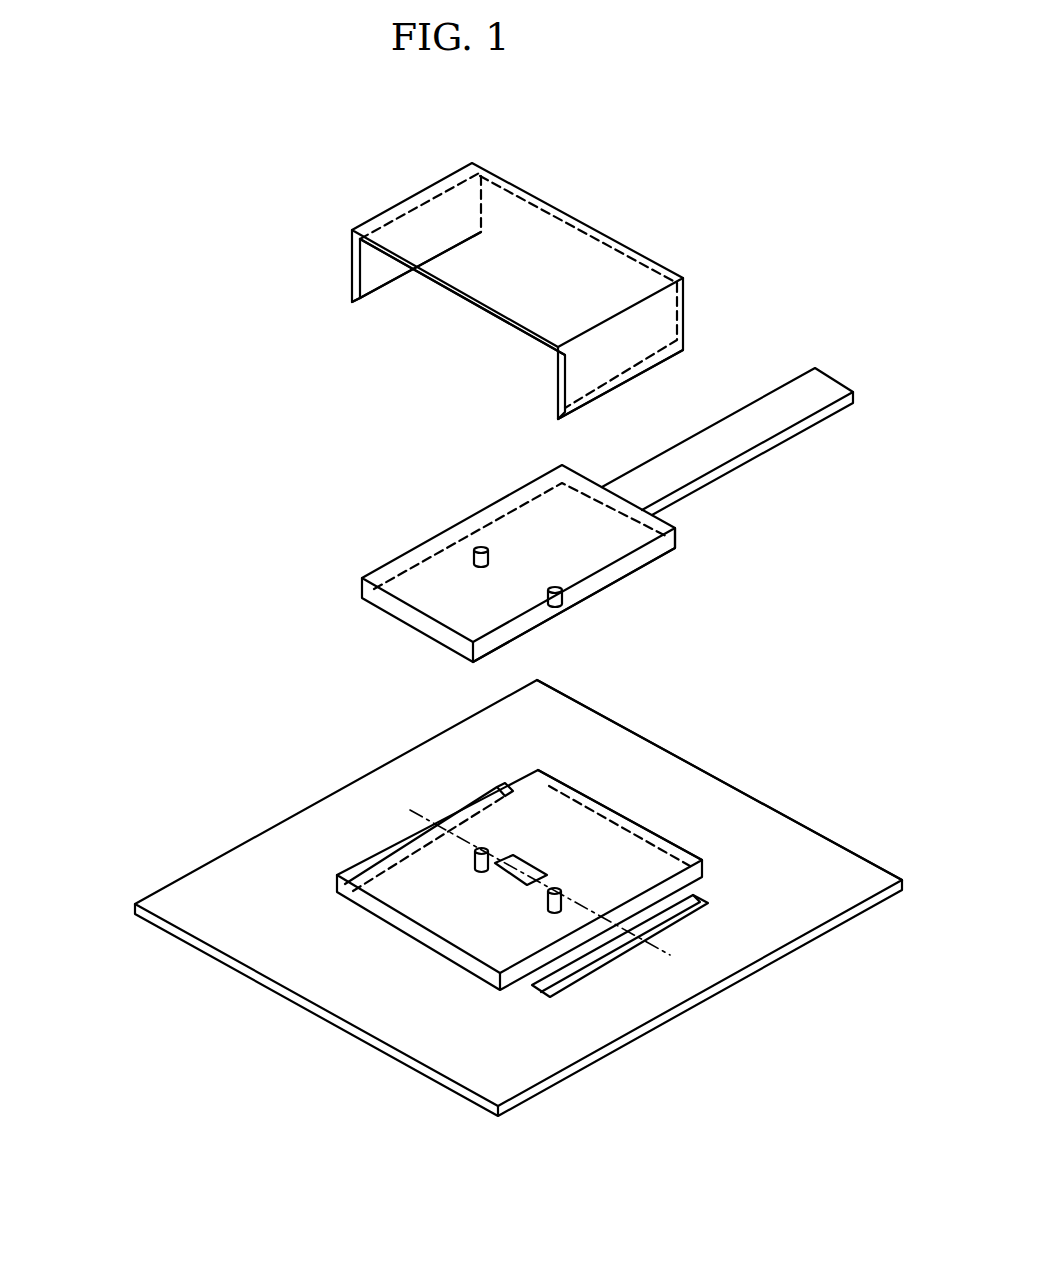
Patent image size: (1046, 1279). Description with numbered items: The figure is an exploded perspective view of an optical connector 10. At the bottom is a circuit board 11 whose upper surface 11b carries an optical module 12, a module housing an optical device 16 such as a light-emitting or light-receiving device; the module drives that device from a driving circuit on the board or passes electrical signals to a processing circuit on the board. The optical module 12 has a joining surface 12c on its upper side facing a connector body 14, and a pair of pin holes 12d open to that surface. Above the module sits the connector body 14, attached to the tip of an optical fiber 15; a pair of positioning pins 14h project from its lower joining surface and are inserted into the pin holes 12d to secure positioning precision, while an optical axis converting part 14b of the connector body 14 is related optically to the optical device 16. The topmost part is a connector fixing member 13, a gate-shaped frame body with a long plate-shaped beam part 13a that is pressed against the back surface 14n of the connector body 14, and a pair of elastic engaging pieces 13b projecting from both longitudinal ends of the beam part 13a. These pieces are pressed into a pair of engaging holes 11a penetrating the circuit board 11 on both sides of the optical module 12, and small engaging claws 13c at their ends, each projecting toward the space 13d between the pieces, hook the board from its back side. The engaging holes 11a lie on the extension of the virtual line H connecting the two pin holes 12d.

The optical connector 10 is at (108, 160).
The circuit board 11 is at (518, 898).
The engaging holes 11a is at (443, 830).
The surface 11b is at (748, 943).
The optical module 12 is at (562, 871).
The joining surface 12c is at (603, 842).
The pin holes 12d is at (486, 848).
The connector fixing member 13 is at (517, 297).
The beam part 13a is at (568, 213).
The elastic engaging pieces 13b is at (350, 265).
The engaging claws 13c is at (388, 300).
The space 13d is at (467, 330).
The connector body 14 is at (554, 563).
The back surface 14n is at (523, 547).
The positioning pins 14h is at (473, 556).
The optical axis converting part 14b is at (663, 561).
The optical fiber 15 is at (788, 380).
The optical device 16 is at (528, 857).
The virtual line H is at (553, 893).